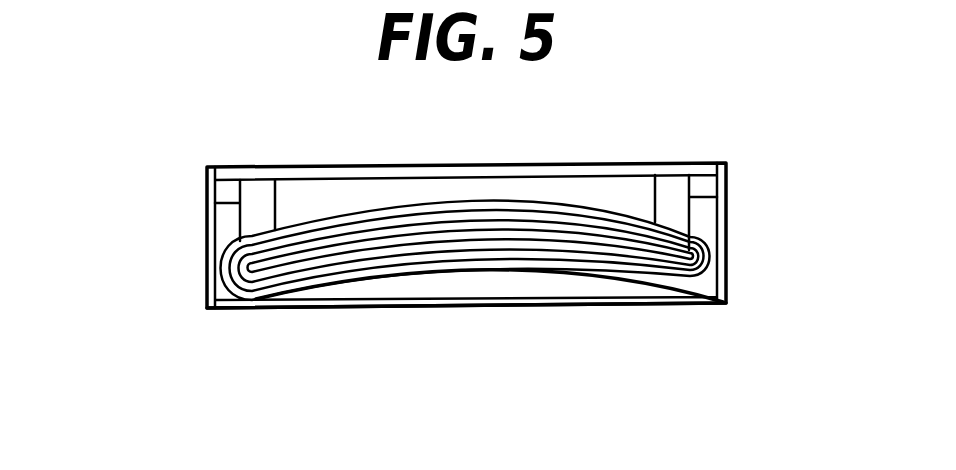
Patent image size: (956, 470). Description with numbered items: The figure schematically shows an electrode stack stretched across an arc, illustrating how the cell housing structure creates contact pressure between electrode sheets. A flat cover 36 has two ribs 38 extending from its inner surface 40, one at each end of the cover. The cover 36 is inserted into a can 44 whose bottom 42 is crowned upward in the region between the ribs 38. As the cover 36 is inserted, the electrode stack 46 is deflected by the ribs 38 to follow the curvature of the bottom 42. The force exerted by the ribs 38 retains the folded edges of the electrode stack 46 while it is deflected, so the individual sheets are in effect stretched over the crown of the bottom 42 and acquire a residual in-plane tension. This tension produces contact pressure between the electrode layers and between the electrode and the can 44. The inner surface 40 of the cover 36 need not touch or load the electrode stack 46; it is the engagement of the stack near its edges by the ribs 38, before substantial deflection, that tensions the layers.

The flat cover 36 is at (445, 167).
The ribs 38 is at (215, 203).
The inner surface 40 is at (300, 190).
The bottom 42 is at (302, 296).
The can 44 is at (208, 280).
The electrode stack 46 is at (520, 203).